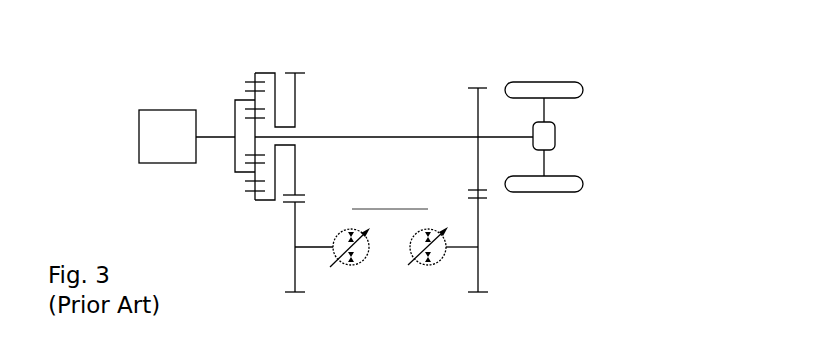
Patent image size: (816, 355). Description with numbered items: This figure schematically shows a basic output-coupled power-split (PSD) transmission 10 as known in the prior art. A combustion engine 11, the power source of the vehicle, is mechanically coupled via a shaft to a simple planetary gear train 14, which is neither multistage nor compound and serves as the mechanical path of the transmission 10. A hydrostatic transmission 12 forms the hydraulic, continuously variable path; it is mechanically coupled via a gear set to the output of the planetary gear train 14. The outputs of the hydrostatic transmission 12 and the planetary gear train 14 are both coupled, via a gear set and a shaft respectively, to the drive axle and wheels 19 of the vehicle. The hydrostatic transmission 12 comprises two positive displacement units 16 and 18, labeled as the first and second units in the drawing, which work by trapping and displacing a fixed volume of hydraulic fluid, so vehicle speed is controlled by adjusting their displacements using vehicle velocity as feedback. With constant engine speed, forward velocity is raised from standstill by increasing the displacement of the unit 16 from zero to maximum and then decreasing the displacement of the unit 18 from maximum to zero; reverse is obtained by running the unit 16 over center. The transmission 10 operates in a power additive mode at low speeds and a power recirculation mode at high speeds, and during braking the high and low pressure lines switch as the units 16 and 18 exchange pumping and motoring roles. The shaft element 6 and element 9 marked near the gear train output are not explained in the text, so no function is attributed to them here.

The output-coupled PSD transmission 10 is at (147, 51).
The combustion engine 11 is at (161, 154).
The hydrostatic transmission 12 is at (324, 312).
The planetary gear train 14 is at (333, 86).
The output shaft 6 is at (306, 56).
The output shaft 9 is at (306, 56).
The positive displacement unit 16 is at (365, 257).
The positive displacement unit 18 is at (413, 233).
The drive axle and wheels 19 is at (625, 104).